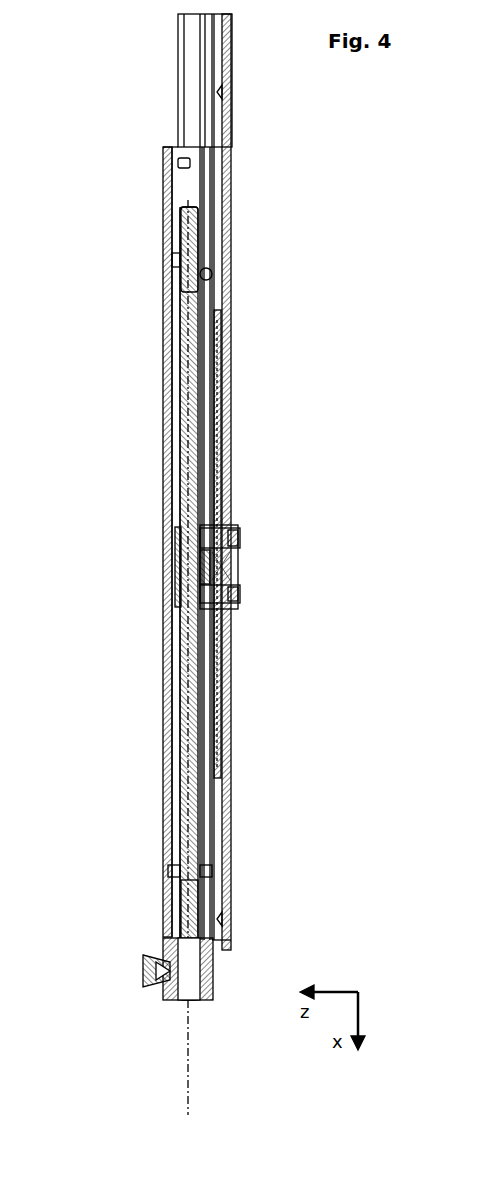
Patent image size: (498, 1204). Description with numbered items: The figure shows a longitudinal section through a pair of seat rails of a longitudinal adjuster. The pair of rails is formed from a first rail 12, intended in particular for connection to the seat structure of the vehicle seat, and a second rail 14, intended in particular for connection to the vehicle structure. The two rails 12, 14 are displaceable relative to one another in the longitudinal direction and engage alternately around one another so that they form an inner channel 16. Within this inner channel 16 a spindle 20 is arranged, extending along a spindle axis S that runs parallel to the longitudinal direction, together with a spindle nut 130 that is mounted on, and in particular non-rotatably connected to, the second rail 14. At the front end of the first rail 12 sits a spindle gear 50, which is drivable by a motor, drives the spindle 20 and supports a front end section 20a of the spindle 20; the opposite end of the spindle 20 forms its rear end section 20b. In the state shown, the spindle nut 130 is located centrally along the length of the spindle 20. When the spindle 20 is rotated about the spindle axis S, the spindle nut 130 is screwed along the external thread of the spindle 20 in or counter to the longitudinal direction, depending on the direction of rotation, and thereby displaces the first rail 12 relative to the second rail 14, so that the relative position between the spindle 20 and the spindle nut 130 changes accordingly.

The first rail 12 is at (163, 343).
The second rail 14 is at (223, 362).
The inner channel 16 is at (175, 510).
The spindle 20 is at (188, 402).
The front end section 20a is at (188, 927).
The rear end section 20b is at (185, 232).
The spindle nut 130 is at (215, 572).
The spindle gear 50 is at (170, 972).
The spindle axis S is at (188, 1068).